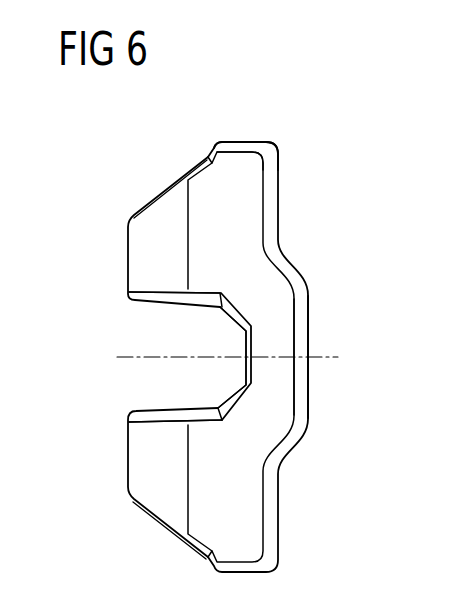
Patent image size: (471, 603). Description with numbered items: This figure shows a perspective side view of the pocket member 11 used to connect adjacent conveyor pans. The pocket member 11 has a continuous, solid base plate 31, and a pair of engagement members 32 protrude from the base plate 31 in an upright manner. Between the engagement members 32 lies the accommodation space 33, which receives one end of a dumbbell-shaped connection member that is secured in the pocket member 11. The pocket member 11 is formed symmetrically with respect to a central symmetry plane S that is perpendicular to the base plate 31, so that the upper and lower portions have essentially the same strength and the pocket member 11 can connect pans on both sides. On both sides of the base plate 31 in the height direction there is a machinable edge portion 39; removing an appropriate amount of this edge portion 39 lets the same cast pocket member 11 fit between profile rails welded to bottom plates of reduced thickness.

The pocket member 11 is at (258, 200).
The machinable edge portion 39 is at (240, 138).
The engagement member 32 is at (161, 191).
The base plate 31 is at (310, 398).
The accommodation space 33 is at (125, 322).
The central symmetry plane S is at (128, 357).